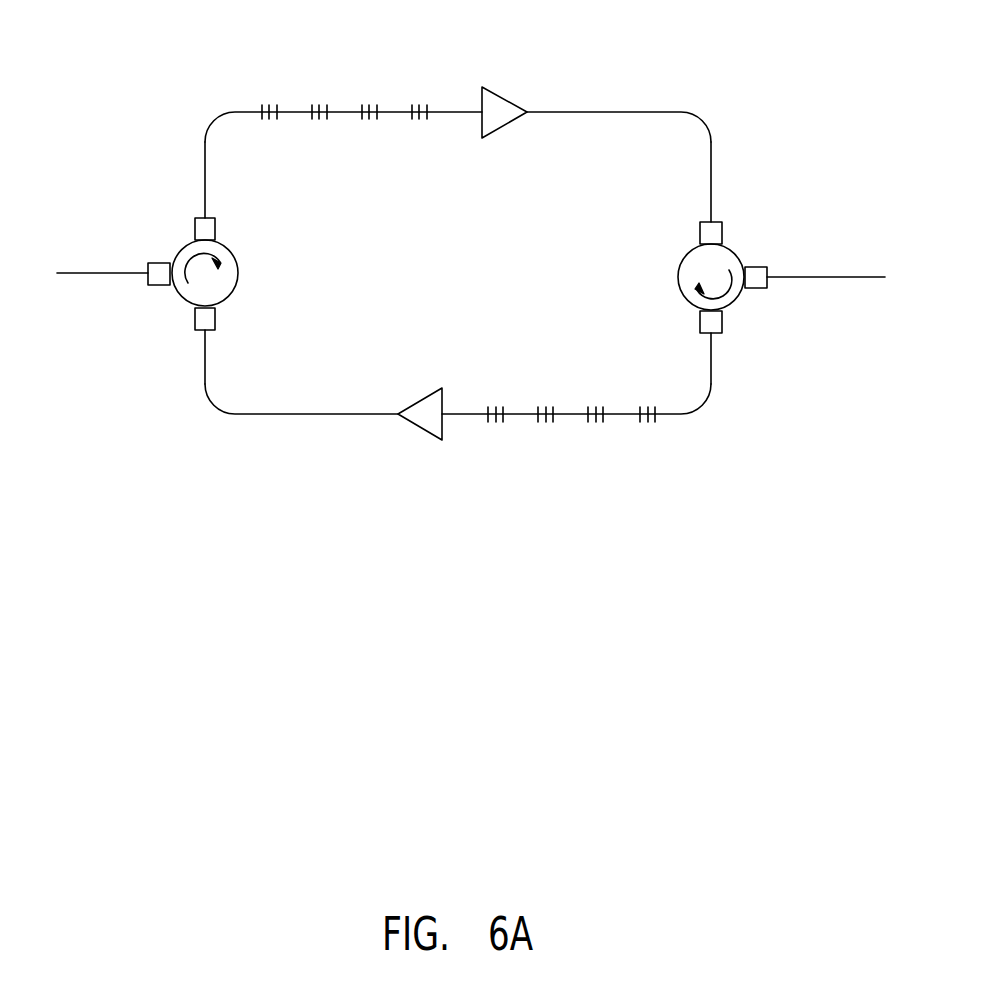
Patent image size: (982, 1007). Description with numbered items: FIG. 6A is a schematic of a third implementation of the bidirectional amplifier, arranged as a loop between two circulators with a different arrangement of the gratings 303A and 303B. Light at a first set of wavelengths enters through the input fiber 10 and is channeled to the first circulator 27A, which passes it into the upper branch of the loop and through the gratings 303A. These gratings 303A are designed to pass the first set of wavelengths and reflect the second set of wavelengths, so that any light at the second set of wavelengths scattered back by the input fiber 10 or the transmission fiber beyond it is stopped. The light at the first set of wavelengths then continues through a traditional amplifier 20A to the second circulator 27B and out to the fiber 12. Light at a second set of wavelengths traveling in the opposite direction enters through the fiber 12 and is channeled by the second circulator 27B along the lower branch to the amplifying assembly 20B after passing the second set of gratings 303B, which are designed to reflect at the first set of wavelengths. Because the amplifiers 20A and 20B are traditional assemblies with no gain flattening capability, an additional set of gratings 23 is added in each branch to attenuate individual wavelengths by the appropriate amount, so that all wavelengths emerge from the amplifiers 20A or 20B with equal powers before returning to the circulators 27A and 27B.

The input fiber 10 is at (82, 273).
The fiber 12 is at (866, 277).
The traditional amplifier 20A is at (502, 93).
The amplifying assembly 20B is at (418, 423).
The additional set of gratings 23 is at (318, 125).
The first circulator 27A is at (238, 285).
The second circulator 27B is at (735, 249).
The gratings 303A is at (417, 98).
The second set of gratings 303B is at (547, 425).